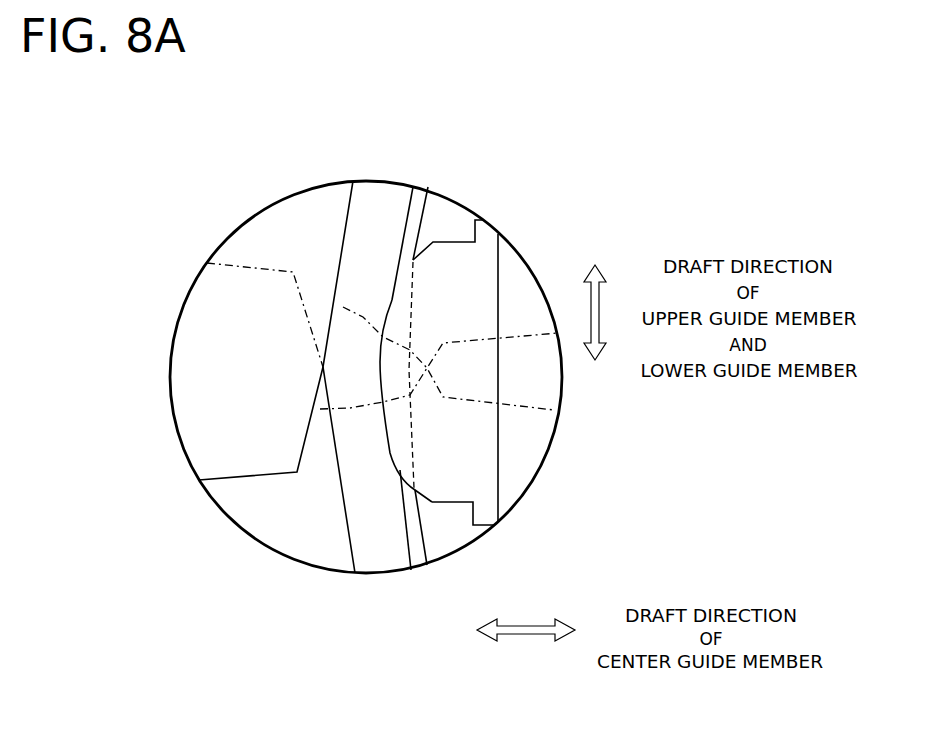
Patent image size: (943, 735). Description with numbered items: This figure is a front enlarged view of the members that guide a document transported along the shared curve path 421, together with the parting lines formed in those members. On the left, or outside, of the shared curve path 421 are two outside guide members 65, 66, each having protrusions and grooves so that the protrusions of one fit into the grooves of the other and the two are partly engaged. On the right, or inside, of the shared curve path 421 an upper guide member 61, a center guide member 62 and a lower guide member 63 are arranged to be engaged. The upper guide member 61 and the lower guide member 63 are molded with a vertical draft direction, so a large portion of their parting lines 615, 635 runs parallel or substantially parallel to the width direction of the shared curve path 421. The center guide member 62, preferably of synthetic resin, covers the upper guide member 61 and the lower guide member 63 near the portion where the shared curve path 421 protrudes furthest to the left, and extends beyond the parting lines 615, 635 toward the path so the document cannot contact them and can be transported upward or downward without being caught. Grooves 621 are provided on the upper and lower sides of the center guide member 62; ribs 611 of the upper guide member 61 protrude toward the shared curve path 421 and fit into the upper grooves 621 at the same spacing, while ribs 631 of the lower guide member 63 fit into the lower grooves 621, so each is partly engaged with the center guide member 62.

The shared curve path 421 is at (374, 190).
The outside guide member 65 is at (298, 203).
The upper guide member 61 is at (453, 208).
The ribs 611 is at (407, 203).
The parting line 615 is at (343, 307).
The center guide member 62 is at (368, 368).
The grooves 621 is at (393, 300).
The parting line 635 is at (320, 392).
The lower guide member 63 is at (457, 536).
The ribs 631 is at (414, 546).
The outside guide member 66 is at (328, 552).